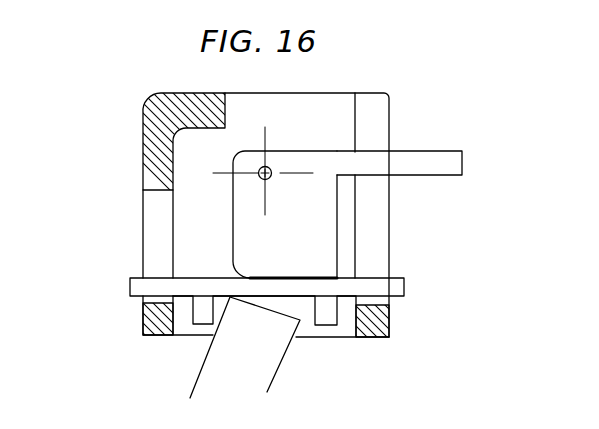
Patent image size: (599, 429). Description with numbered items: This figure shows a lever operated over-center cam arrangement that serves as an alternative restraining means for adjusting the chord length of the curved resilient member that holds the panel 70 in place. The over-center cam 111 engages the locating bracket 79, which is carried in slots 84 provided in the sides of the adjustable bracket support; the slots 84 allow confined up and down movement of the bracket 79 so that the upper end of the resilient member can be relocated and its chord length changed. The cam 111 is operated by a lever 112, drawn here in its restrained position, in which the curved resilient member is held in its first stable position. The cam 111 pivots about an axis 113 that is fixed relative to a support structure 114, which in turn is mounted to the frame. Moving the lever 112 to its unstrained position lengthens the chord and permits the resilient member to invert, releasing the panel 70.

The panel 70 is at (253, 385).
The locating bracket 79 is at (397, 287).
The slots 84 is at (158, 232).
The over-center cam 111 is at (305, 255).
The lever 112 is at (407, 167).
The axis 113 is at (270, 167).
The support structure 114 is at (147, 98).